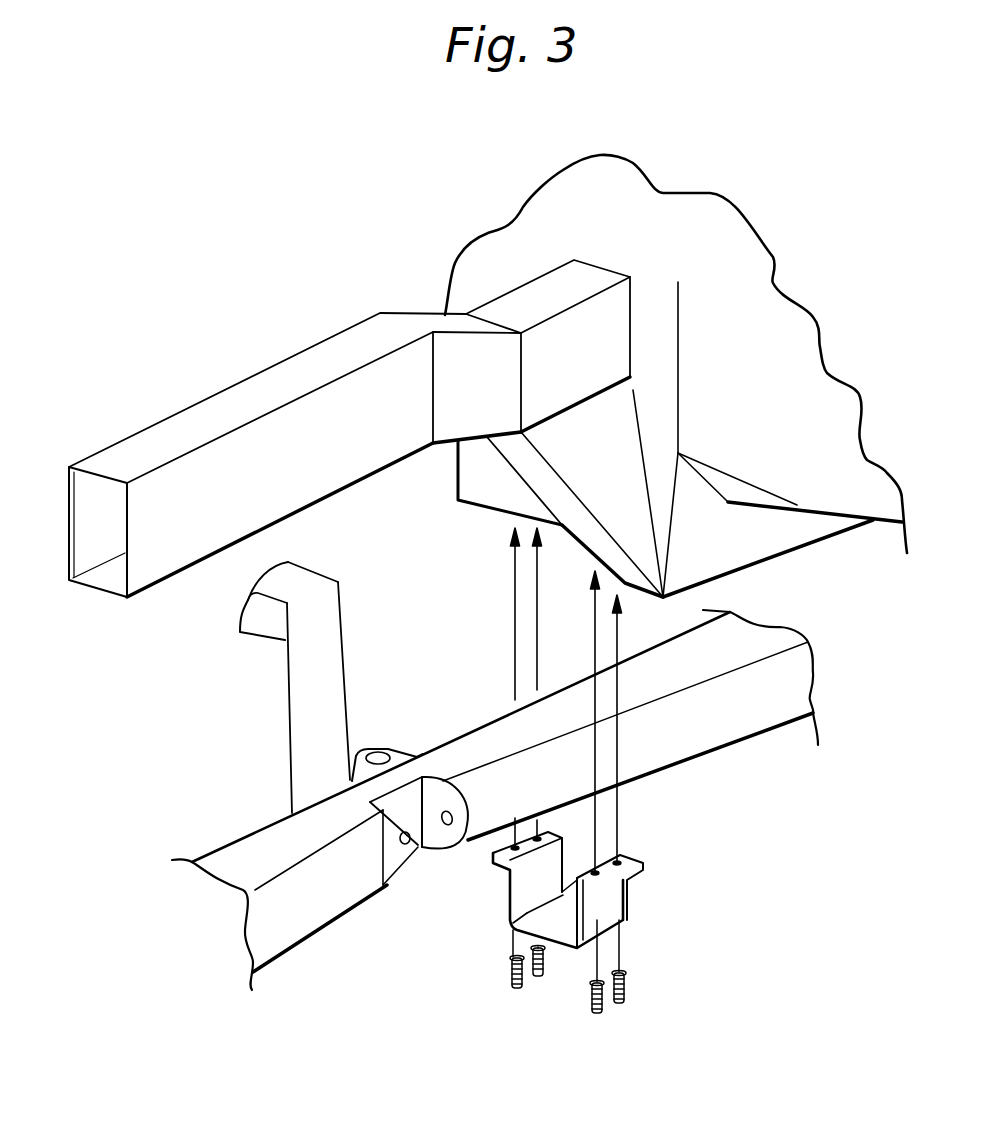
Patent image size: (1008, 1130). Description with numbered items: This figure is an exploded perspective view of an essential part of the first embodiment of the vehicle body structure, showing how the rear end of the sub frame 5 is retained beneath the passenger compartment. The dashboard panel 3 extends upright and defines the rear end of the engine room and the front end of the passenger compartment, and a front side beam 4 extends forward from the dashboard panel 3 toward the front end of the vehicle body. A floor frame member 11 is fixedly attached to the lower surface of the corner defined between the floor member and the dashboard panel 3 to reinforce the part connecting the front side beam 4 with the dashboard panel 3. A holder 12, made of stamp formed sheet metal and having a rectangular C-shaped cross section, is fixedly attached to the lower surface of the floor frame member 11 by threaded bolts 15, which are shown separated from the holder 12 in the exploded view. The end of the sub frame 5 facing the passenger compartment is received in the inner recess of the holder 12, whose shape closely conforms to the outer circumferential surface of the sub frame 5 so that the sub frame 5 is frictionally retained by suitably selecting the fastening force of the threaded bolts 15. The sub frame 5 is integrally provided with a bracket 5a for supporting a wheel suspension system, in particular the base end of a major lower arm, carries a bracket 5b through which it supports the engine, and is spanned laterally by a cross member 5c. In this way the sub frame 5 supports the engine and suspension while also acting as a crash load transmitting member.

The dashboard panel 3 is at (824, 492).
The front side beam 4 is at (300, 363).
The sub frame 5 is at (715, 733).
The bracket 5a is at (430, 886).
The bracket 5b is at (370, 748).
The cross member 5c is at (297, 687).
The floor frame member 11 is at (520, 458).
The holder 12 is at (630, 888).
The threaded bolt 15 is at (542, 978).